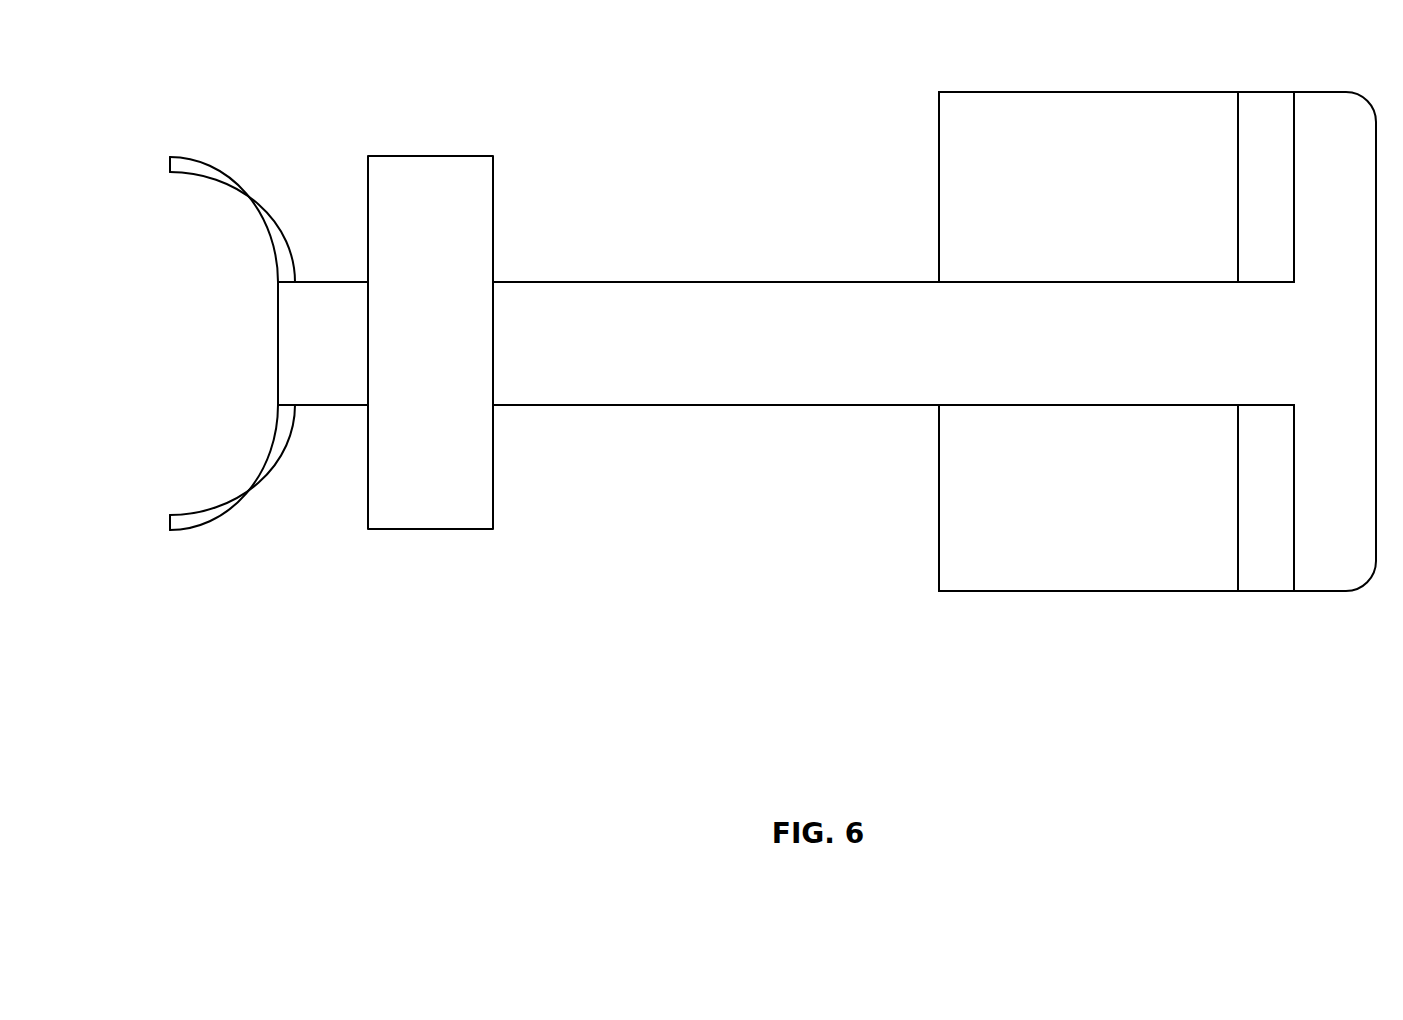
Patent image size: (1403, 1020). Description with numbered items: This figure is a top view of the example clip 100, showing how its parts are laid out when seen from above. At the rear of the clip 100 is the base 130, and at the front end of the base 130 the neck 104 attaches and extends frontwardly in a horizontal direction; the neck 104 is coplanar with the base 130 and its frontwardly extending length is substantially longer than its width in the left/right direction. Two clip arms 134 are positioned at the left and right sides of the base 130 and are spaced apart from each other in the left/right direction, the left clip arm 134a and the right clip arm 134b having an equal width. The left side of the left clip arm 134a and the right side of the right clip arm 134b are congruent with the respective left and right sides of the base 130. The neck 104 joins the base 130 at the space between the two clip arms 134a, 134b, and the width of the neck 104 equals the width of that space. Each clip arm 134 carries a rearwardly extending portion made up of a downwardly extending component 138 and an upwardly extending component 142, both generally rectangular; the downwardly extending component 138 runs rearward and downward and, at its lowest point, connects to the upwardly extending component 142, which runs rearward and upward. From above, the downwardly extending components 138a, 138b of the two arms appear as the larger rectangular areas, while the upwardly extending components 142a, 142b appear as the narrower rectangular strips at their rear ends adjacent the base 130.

The clip 100 is at (751, 434).
The neck 104 is at (735, 375).
The base 130 is at (1346, 573).
The clip arm 134 is at (972, 405).
The left clip arm 134a is at (1029, 558).
The right clip arm 134b is at (1052, 152).
The downwardly extending component 138 is at (994, 671).
The downwardly extending component of the left clip arm 138a is at (1095, 532).
The downwardly extending component of the right clip arm 138b is at (1123, 145).
The upwardly extending component 142 is at (1180, 686).
The upwardly extending component of the left clip arm 142a is at (1263, 570).
The upwardly extending component of the right clip arm 142b is at (1263, 128).